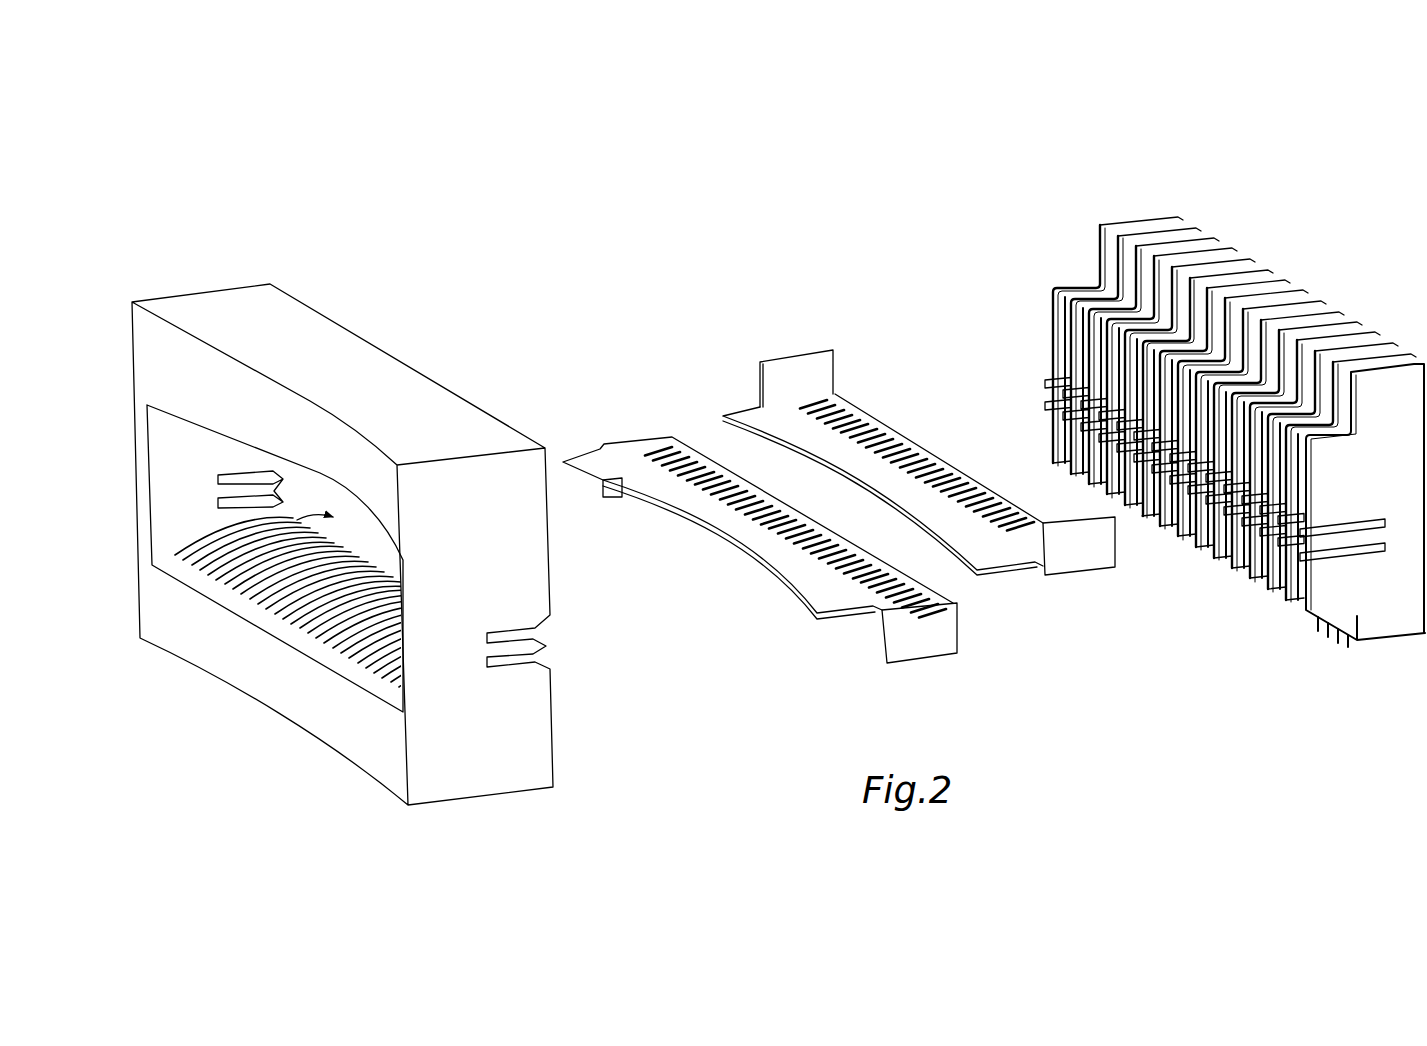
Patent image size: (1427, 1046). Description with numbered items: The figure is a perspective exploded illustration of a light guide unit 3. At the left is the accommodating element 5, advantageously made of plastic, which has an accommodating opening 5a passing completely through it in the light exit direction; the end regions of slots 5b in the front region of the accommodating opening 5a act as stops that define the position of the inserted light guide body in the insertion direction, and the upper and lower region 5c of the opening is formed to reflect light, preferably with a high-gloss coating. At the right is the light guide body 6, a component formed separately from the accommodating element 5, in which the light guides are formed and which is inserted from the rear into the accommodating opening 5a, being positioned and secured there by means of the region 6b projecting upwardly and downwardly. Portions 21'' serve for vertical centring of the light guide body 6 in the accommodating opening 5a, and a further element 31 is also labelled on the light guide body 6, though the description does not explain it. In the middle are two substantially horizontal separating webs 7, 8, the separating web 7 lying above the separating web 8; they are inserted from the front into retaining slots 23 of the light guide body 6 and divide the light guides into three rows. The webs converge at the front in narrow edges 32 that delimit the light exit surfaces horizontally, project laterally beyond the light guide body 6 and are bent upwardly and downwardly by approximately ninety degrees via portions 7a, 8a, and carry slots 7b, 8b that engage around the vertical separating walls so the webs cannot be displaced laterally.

The light guide unit 3 is at (455, 90).
The accommodating element 5 is at (528, 760).
The accommodating opening 5a is at (297, 520).
The slots 5b is at (207, 565).
The upper and lower region 5c is at (265, 455).
The light guide body 6 is at (1020, 215).
The region 6b is at (1387, 403).
The separating web 7 is at (792, 420).
The portions 7a is at (808, 375).
The slots 7b is at (863, 427).
The separating web 8 is at (628, 463).
The portions 8a is at (614, 488).
The slots 8b is at (675, 440).
The portions 21'' is at (1200, 422).
The retaining slots 23 is at (1045, 381).
The fin gaps 31 is at (1227, 420).
The narrow edges 32 is at (753, 557).